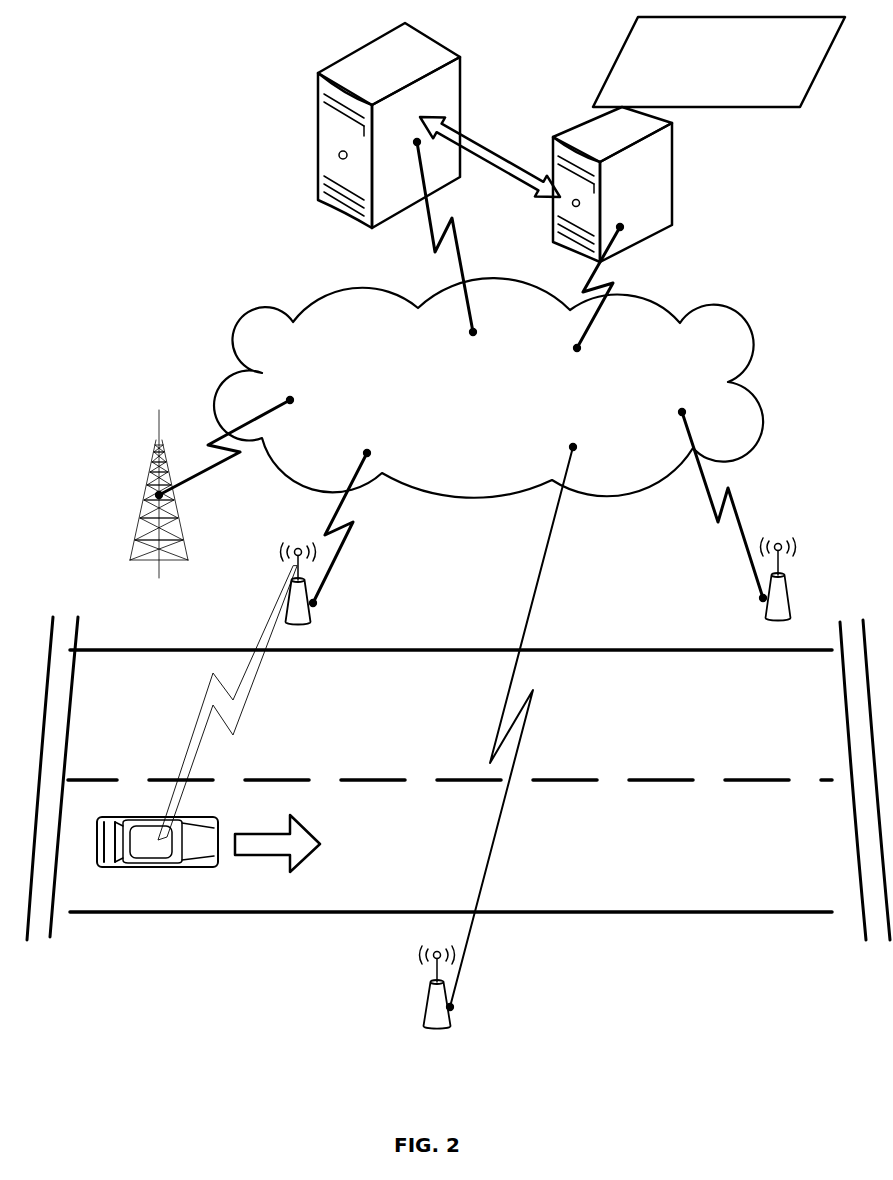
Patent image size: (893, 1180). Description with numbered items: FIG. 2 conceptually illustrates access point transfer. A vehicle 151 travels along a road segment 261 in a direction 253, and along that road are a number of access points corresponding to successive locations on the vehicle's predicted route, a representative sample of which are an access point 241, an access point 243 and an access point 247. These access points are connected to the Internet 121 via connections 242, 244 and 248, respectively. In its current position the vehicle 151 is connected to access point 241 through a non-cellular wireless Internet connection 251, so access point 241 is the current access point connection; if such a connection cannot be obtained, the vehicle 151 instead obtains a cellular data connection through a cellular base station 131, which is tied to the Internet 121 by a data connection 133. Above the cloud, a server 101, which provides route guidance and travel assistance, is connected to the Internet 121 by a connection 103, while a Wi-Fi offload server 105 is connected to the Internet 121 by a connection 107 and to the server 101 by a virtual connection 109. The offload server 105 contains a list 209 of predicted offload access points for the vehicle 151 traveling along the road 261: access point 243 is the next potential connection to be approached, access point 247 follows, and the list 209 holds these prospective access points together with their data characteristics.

The server 101 is at (327, 140).
The connection 103 is at (437, 247).
The Wi-Fi offload server 105 is at (613, 180).
The connection 107 is at (677, 312).
The virtual connection 109 is at (477, 137).
The list of predicted offload access points 209 is at (702, 53).
The Internet 121 is at (472, 387).
The cellular base station 131 is at (142, 527).
The data connection 133 is at (210, 475).
The access point 241 is at (305, 607).
The connection 242 is at (333, 563).
The access point 243 is at (433, 1006).
The connection 244 is at (492, 845).
The access point 247 is at (775, 598).
The connection 248 is at (732, 498).
The vehicle 151 is at (160, 867).
The non-cellular wireless Internet connection 251 is at (223, 705).
The direction 253 is at (267, 848).
The road segment 261 is at (577, 913).